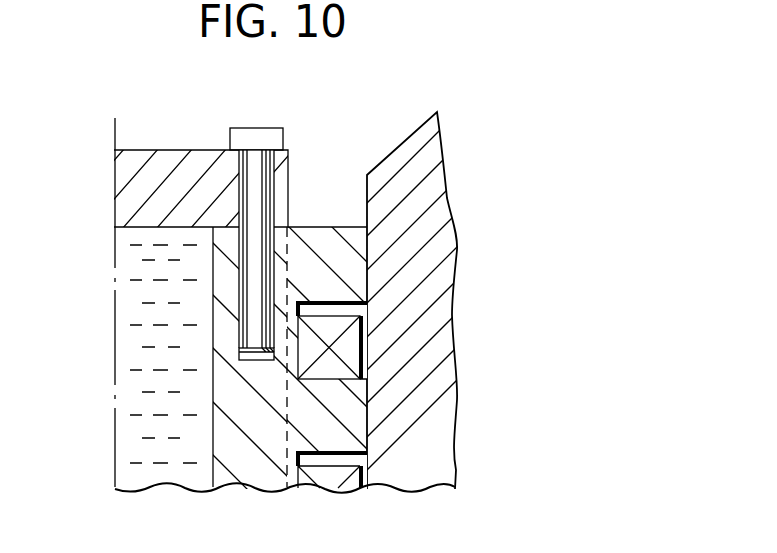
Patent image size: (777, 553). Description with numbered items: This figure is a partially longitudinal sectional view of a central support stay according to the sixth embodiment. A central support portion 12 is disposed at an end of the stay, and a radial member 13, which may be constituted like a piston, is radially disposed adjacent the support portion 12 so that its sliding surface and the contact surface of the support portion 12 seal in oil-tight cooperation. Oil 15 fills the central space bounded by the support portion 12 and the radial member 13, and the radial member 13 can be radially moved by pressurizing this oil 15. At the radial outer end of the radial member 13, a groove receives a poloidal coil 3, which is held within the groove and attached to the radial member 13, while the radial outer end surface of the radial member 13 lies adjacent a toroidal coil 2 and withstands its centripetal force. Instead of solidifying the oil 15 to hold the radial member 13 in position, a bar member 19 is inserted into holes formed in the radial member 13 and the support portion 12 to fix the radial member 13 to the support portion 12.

The toroidal coil 2 is at (400, 160).
The poloidal coil 3 is at (347, 340).
The central support portion 12 is at (169, 166).
The radial member 13 is at (327, 243).
The oil 15 is at (127, 408).
The bar member 19 is at (283, 131).